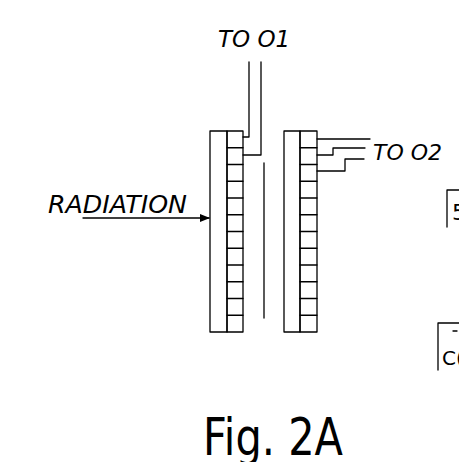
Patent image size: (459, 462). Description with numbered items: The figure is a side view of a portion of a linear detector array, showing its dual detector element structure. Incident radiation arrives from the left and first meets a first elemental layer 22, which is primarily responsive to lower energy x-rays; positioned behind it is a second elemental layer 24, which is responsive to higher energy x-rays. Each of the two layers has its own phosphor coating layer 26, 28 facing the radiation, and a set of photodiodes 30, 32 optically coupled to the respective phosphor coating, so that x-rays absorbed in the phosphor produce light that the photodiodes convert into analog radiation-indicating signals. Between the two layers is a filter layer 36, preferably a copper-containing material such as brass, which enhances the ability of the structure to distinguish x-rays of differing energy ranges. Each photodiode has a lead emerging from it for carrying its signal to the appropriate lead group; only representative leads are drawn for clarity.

The first elemental layer 22 is at (193, 217).
The second elemental layer 24 is at (335, 224).
The phosphor coating layer 26 is at (212, 131).
The phosphor coating layer 28 is at (292, 131).
The photodiode 30 is at (233, 131).
The photodiode 32 is at (312, 131).
The filter layer 36 is at (264, 318).